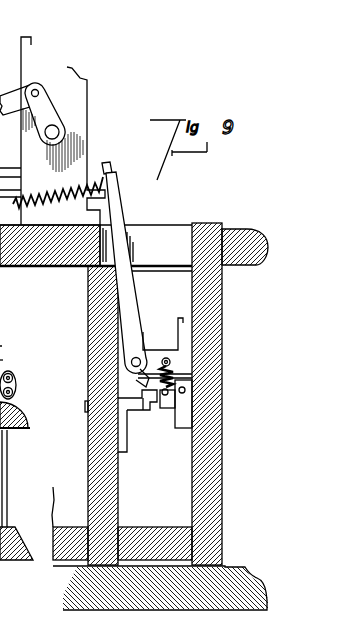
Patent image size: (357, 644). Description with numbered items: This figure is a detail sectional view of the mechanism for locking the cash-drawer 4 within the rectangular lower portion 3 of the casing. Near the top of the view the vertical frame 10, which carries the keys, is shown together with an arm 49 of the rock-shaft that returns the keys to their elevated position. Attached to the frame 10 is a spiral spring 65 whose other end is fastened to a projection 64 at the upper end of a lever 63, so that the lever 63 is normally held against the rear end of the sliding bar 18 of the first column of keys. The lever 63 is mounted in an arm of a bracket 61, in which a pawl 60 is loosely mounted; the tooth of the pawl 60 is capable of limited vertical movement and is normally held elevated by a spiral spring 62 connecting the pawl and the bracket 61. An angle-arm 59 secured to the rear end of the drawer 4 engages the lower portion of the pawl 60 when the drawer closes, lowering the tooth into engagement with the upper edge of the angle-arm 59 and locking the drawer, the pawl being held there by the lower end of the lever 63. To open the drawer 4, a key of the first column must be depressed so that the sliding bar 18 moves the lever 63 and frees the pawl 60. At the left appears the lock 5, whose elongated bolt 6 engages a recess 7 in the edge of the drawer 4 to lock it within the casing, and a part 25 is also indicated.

The rectangular lower portion 3 is at (134, 416).
The cash-drawer 4 is at (122, 415).
The lock 5 is at (6, 353).
The bolt 6 is at (16, 399).
The recess 7 is at (9, 436).
The vertical frame 10 is at (87, 149).
The sliding bar 18 is at (105, 190).
The arm 25 is at (7, 338).
The arm 49 is at (41, 127).
The angle-arm 59 is at (131, 438).
The pawl 60 is at (137, 410).
The bracket 61 is at (172, 361).
The spiral spring 62 is at (176, 378).
The lever 63 is at (163, 332).
The projection 64 is at (111, 171).
The spiral spring 65 is at (45, 201).